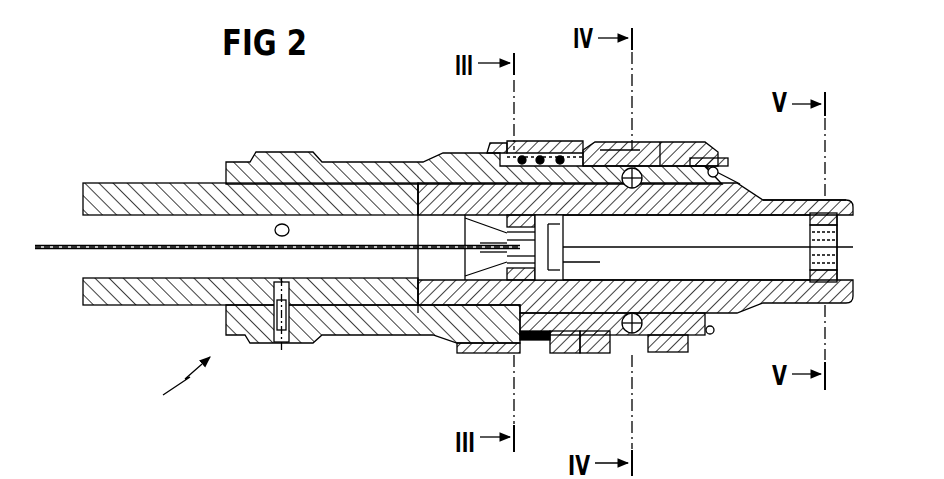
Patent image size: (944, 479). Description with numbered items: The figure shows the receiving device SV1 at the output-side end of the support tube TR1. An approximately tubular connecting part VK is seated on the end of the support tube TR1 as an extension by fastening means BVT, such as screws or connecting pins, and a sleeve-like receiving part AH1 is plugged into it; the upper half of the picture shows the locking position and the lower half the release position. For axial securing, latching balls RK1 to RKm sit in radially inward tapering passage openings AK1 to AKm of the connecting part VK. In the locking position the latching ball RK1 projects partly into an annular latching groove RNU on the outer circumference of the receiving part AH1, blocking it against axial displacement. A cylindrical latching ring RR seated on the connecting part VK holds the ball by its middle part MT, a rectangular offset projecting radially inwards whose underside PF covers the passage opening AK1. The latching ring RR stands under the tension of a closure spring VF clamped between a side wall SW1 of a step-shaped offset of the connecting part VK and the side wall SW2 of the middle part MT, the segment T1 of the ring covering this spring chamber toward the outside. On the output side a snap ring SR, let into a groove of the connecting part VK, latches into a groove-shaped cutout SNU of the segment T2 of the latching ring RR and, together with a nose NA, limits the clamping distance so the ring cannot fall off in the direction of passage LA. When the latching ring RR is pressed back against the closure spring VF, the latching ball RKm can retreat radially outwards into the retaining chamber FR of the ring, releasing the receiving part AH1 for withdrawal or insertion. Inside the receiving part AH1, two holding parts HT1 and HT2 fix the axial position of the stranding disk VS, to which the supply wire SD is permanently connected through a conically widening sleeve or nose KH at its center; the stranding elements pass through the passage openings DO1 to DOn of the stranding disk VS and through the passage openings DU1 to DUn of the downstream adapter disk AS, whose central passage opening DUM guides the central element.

The direction of passage LA is at (70, 233).
The support tube TR1 is at (147, 190).
The supply wire SD is at (167, 252).
The connecting part VK is at (270, 162).
The fastening means BVT is at (275, 318).
The receiving device SV1 is at (174, 395).
The holding part HT1 is at (507, 236).
The sleeve or nose KH is at (507, 259).
The holding part HT2 is at (550, 233).
The passage opening of stranding disk DOn is at (488, 214).
The passage opening of stranding disk DO1 is at (484, 345).
The side wall of step-shaped offset SW1 is at (497, 152).
The side wall of middle part SW2 is at (588, 158).
The left-hand segment of latching ring T1 is at (549, 143).
The output-side segment of latching ring T2 is at (700, 152).
The closure spring VF is at (533, 152).
The middle part of latching ring MT is at (597, 152).
The passage opening AK1 is at (617, 152).
The latching ball RK1 is at (636, 168).
The latching ring RR is at (665, 138).
The retaining chamber FR is at (672, 145).
The groove-shaped cutout SNU is at (722, 163).
The snap ring SR is at (724, 172).
The receiving part AH1 is at (760, 193).
The adapter disk AS is at (836, 200).
The underside of middle part PF is at (628, 210).
The nose NA is at (683, 204).
The latching groove RNU is at (638, 310).
The passage opening of adapter disk DU1 is at (835, 225).
The central passage opening DUM is at (840, 258).
The passage opening of adapter disk DUn is at (845, 292).
The stranding disk VS is at (482, 352).
The latching ball RKm is at (641, 335).
The passage opening AKm is at (662, 350).